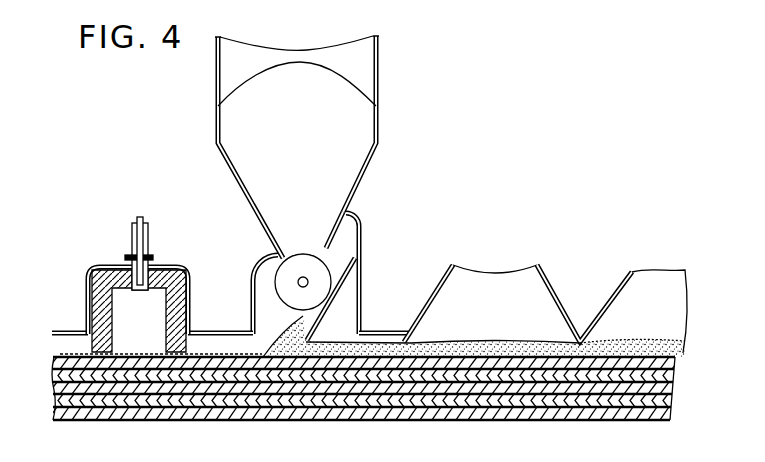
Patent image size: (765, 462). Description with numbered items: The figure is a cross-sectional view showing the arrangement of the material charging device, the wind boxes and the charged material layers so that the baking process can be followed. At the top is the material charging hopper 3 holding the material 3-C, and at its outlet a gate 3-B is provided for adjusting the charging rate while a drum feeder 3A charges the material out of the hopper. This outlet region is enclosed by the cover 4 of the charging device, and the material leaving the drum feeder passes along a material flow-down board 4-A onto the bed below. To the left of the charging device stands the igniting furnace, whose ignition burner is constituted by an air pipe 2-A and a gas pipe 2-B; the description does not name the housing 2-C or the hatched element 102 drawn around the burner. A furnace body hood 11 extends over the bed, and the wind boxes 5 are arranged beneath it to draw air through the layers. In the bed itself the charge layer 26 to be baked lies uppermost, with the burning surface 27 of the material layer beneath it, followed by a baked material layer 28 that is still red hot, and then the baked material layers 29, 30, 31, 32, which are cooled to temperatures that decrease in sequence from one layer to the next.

The material charging hopper 3 is at (379, 74).
The material 3-C is at (315, 157).
The gate 3-B is at (327, 240).
The drum feeder 3A is at (284, 300).
The cover of the charging device 4 is at (252, 292).
The material flow-down board 4-A is at (328, 312).
The wind boxes 5 is at (465, 313).
The furnace body hood 11 is at (62, 332).
The air pipe 2-A is at (148, 233).
The gas pipe 2-B is at (137, 218).
The cover 2-C is at (172, 266).
The hatched support block 102 is at (148, 329).
The charge layer to be baked 26 is at (453, 349).
The burning surface of a material layer 27 is at (682, 360).
The baked material layer in red hot state 28 is at (58, 364).
The baked material layer 29 is at (670, 378).
The baked material layer 30 is at (60, 388).
The baked material layer 31 is at (668, 403).
The baked material layer 32 is at (58, 414).